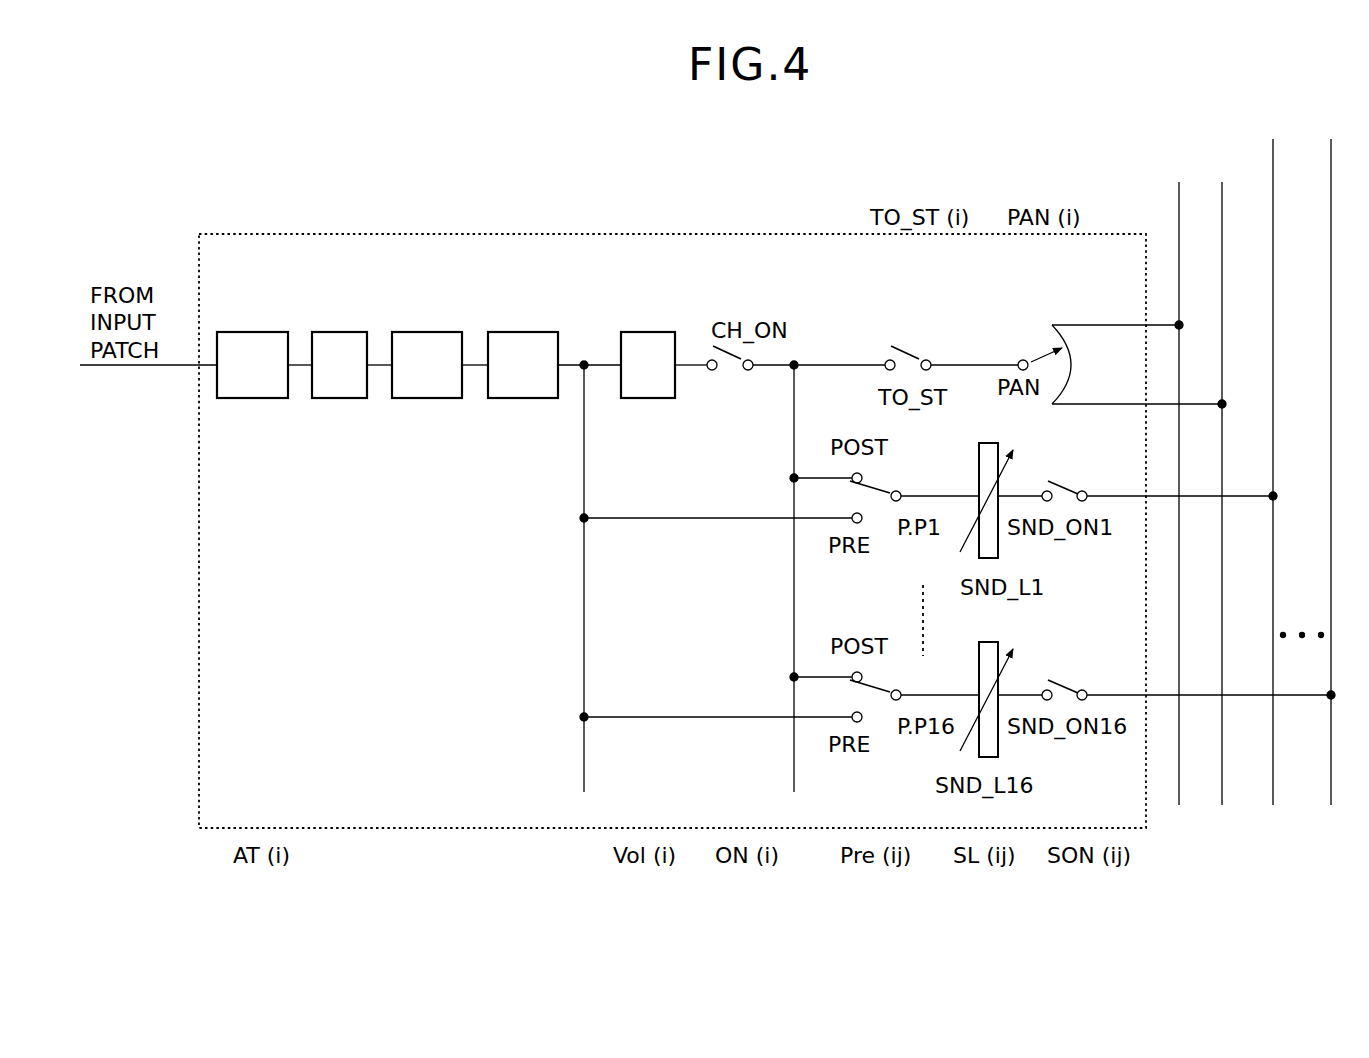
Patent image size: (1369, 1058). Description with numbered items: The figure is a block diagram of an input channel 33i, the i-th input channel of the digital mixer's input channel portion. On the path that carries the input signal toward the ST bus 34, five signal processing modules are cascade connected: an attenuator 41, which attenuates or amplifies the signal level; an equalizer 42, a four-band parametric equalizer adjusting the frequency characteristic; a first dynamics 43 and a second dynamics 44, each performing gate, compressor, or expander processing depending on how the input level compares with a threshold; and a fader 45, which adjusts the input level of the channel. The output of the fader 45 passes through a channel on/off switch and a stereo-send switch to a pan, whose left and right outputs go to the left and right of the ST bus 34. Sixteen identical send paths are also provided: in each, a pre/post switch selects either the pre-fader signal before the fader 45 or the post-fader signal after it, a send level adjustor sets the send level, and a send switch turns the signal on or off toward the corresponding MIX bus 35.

The input channel 33i is at (488, 230).
The attenuator 41 is at (253, 331).
The equalizer 42 is at (340, 331).
The first dynamics 43 is at (429, 331).
The second dynamics 44 is at (526, 331).
The fader 45 is at (652, 331).
The ST bus 34 is at (1184, 476).
The MIX bus 35 is at (1287, 455).